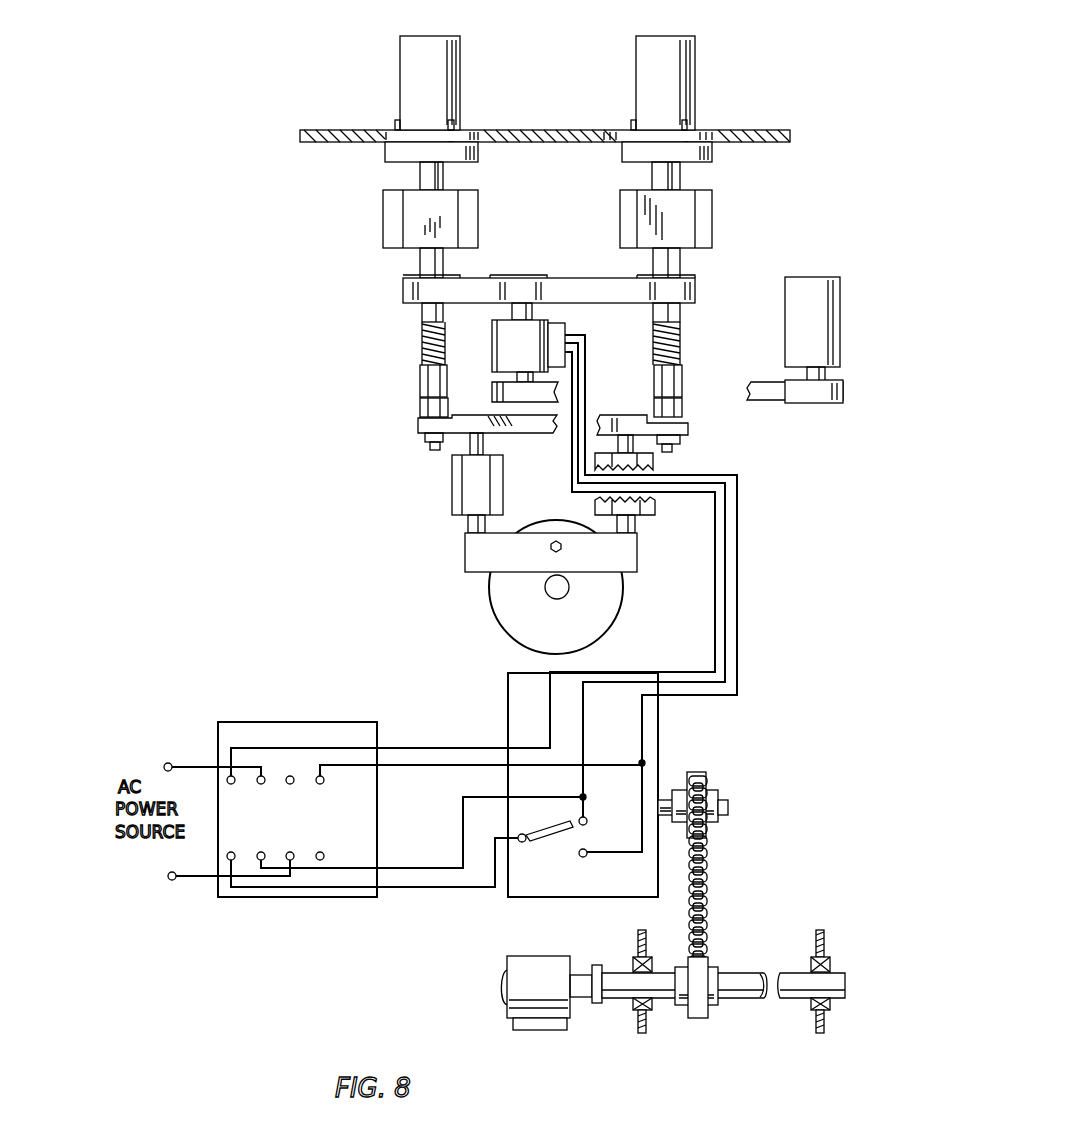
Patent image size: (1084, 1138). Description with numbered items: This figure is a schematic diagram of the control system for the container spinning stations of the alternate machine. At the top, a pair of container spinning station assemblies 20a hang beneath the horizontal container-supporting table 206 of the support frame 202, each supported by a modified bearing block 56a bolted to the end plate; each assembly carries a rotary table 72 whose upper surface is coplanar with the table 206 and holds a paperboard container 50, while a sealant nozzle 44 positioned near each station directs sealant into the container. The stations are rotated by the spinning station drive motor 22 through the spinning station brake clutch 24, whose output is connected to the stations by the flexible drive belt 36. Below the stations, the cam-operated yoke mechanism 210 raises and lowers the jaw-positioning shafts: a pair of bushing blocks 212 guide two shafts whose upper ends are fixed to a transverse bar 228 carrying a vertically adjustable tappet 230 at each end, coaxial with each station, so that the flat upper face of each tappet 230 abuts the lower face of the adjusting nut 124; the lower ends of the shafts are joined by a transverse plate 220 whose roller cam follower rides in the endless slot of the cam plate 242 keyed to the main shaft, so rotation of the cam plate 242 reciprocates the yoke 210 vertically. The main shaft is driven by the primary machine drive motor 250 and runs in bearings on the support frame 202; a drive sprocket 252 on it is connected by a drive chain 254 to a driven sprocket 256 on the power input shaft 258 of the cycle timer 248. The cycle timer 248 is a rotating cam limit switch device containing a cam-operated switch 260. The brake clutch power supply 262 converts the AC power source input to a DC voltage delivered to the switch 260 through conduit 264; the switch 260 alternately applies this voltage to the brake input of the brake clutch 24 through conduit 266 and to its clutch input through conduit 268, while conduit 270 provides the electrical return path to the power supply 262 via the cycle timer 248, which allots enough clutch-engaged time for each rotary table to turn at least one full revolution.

The sealant nozzle 44 is at (462, 14).
The paperboard container 50 is at (444, 83).
The container-supporting table 206 is at (748, 129).
The rotary table 72 is at (388, 152).
The container spinning station assembly 20a is at (561, 210).
The bearing block 56a is at (460, 210).
The flexible drive belt 36 is at (474, 290).
The spinning station brake clutch 24 is at (534, 353).
The spinning station drive motor 22 is at (821, 319).
The adjusting nut 124 is at (428, 384).
The tappet 230 is at (422, 407).
The transverse bar 228 is at (525, 432).
The bushing block 212 is at (468, 478).
The cam-operated yoke mechanism 210 is at (524, 575).
The transverse plate 220 is at (518, 562).
The cam plate 242 is at (612, 616).
The conduit 266 is at (727, 522).
The conduit 268 is at (740, 562).
The conduit 270 is at (713, 574).
The brake clutch power supply 262 is at (228, 898).
The conduit 264 is at (425, 888).
The cycle timer 248 is at (555, 806).
The cam-operated switch 260 is at (552, 838).
The power input shaft 258 is at (667, 802).
The driven sprocket 256 is at (716, 790).
The drive chain 254 is at (708, 856).
The drive sprocket 252 is at (718, 965).
The primary machine drive motor 250 is at (508, 1006).
The support frame 202 is at (648, 1030).